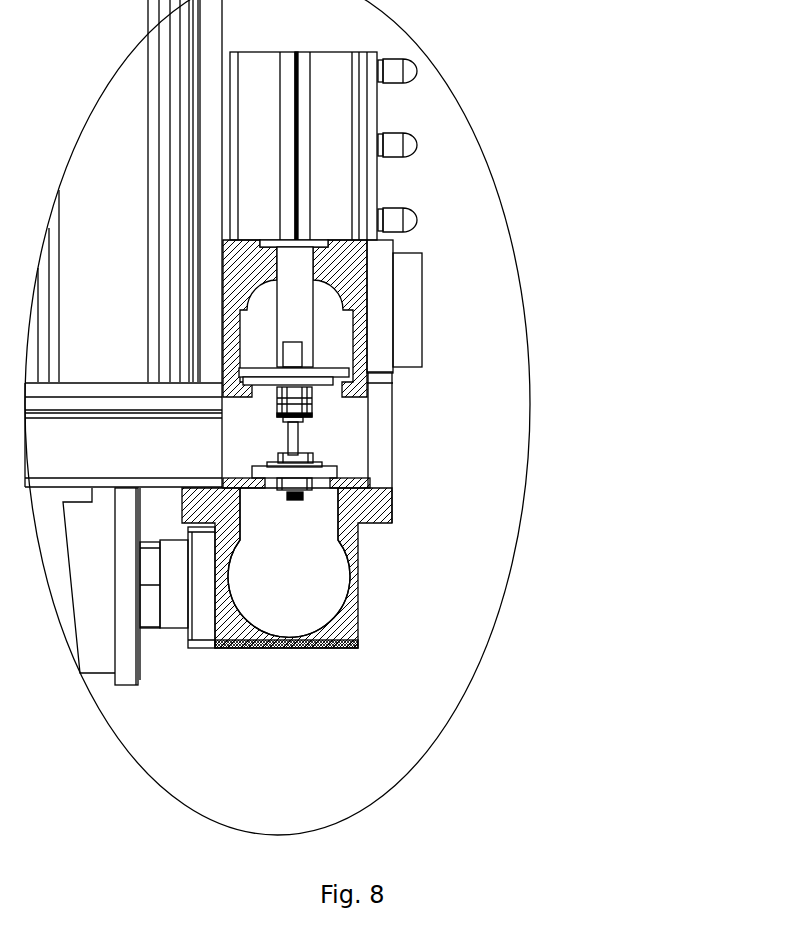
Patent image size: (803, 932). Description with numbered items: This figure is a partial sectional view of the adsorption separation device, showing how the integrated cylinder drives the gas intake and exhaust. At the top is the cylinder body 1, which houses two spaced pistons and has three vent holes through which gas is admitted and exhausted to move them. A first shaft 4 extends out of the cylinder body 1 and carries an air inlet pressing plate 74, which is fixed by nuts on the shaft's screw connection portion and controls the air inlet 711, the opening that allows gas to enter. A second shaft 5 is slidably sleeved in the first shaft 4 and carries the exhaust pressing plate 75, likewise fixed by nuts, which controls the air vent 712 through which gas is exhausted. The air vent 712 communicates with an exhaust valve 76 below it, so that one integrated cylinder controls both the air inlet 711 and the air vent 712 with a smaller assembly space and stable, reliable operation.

The cylinder body 1 is at (378, 111).
The first shaft 4 is at (313, 307).
The air inlet pressing plate 74 is at (330, 367).
The air inlet 711 is at (330, 393).
The second shaft 5 is at (303, 441).
The exhaust pressing plate 75 is at (337, 475).
The air vent 712 is at (343, 498).
The exhaust valve 76 is at (327, 563).